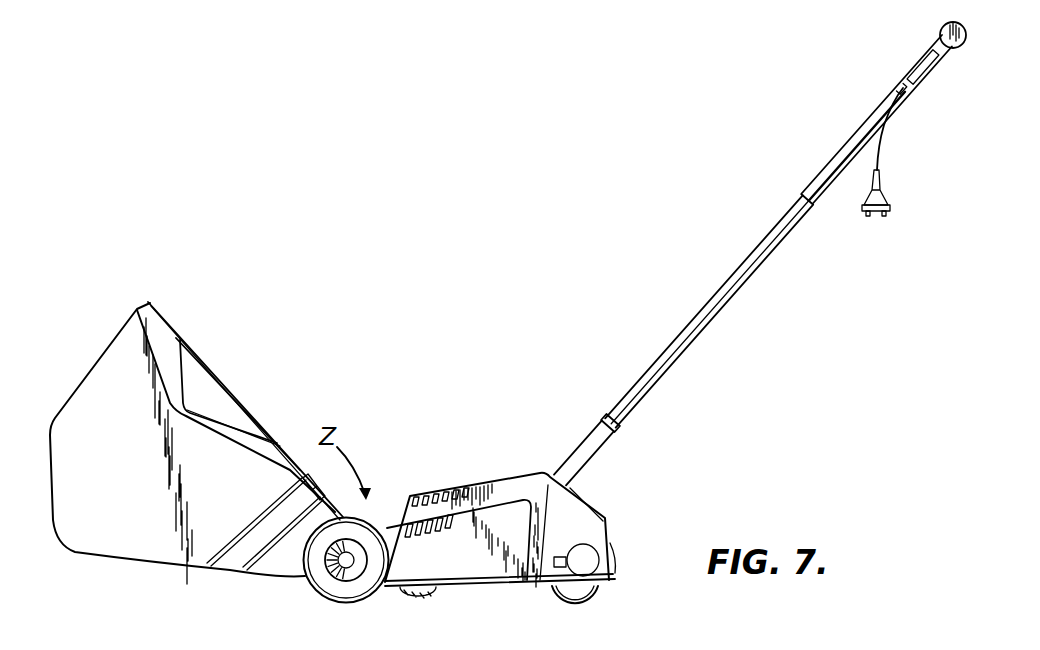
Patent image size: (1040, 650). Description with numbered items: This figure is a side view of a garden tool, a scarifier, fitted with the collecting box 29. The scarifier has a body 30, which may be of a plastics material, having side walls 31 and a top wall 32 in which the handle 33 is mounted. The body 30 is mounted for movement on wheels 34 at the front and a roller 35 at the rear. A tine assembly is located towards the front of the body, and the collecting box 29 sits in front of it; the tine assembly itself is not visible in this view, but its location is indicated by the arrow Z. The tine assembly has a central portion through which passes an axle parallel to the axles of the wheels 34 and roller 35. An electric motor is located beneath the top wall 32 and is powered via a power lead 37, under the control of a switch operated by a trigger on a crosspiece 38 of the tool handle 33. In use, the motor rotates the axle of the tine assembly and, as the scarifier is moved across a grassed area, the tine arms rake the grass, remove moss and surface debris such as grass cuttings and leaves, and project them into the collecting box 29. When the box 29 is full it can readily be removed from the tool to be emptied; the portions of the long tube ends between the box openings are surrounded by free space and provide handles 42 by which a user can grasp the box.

The collecting box 29 is at (108, 378).
The body 30 is at (616, 492).
The side walls 31 is at (461, 565).
The top wall 32 is at (522, 474).
The handle 33 is at (653, 388).
The wheels 34 is at (330, 598).
The roller 35 is at (590, 594).
The power lead 37 is at (577, 448).
The crosspiece 38 is at (968, 33).
The handles 42 is at (237, 400).